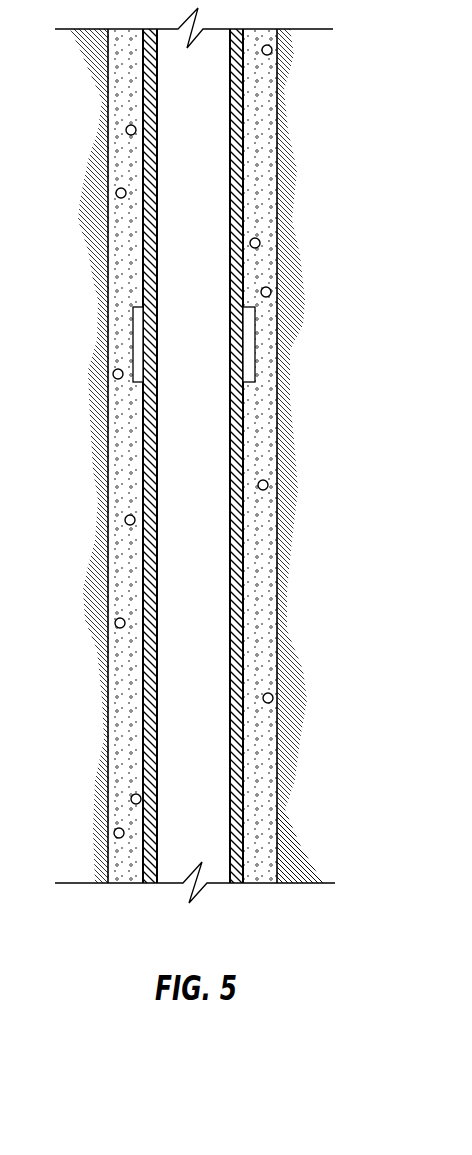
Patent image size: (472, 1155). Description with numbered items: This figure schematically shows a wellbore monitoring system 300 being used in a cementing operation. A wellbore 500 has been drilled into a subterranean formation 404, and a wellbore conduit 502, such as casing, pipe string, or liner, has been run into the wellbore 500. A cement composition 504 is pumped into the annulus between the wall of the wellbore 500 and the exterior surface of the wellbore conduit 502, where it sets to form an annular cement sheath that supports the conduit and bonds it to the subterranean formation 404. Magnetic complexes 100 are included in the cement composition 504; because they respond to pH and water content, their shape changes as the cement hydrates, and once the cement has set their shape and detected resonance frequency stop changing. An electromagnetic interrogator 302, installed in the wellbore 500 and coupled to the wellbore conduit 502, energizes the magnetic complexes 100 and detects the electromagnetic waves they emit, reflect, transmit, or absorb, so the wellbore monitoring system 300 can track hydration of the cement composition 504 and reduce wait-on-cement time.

The magnetic complex 100 is at (129, 125).
The wellbore monitoring system 300 is at (298, 270).
The electromagnetic interrogator 302 is at (137, 338).
The subterranean formation 404 is at (300, 752).
The wellbore 500 is at (108, 236).
The wellbore conduit 502 is at (245, 150).
The cement composition 504 is at (272, 382).